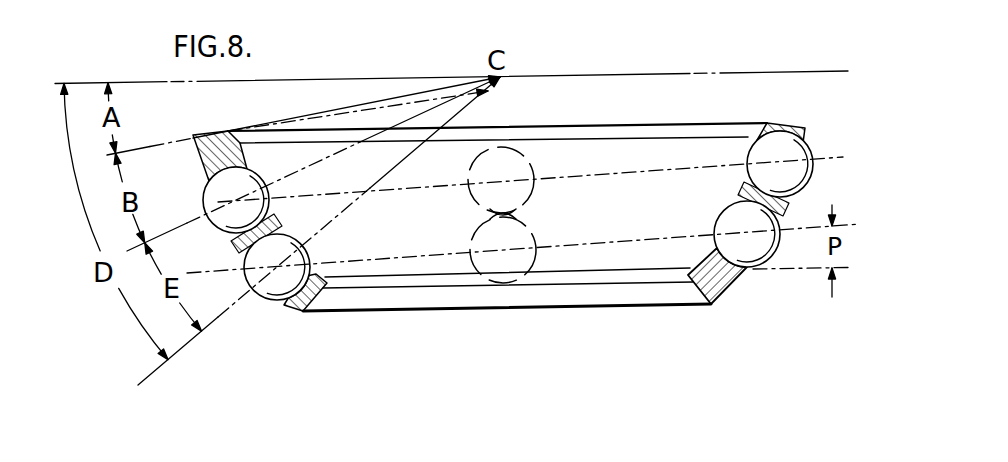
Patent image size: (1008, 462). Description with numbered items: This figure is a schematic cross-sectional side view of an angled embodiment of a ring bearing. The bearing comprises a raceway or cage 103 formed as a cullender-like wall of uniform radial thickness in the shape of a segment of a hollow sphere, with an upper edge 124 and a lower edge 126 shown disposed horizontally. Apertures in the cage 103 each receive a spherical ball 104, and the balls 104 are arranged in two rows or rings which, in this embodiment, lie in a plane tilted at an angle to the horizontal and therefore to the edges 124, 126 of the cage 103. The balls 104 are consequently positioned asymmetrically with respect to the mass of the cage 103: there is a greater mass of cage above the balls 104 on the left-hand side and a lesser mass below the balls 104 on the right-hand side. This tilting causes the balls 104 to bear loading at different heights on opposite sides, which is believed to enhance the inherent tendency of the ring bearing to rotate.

The cage 103 is at (726, 283).
The ball 104 is at (804, 143).
The upper edge 124 is at (721, 123).
The lower edge 126 is at (557, 311).